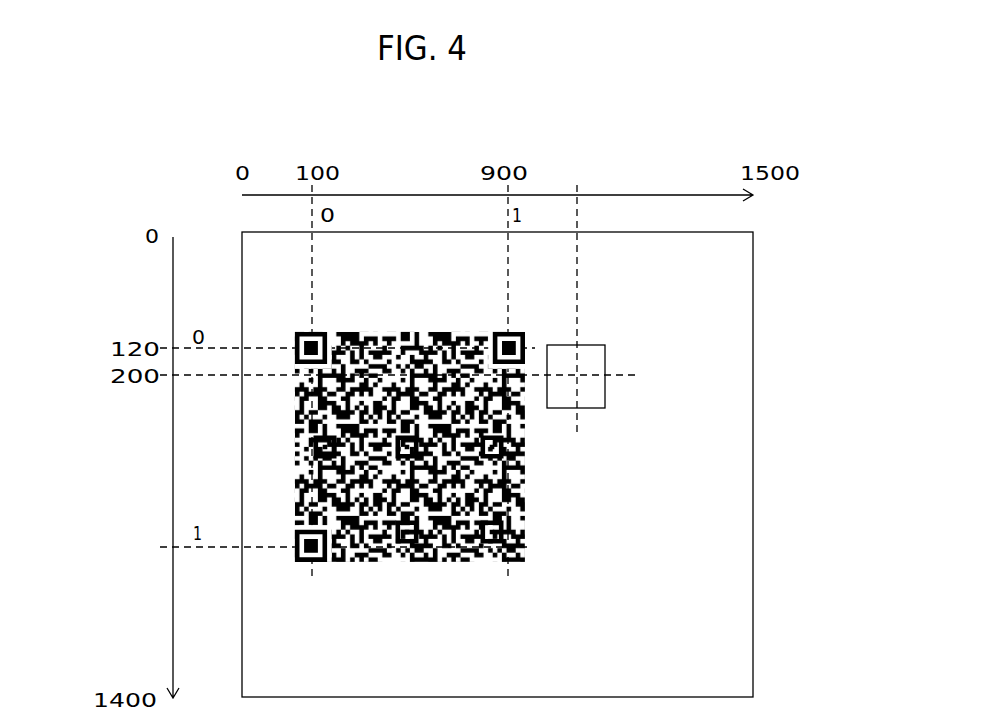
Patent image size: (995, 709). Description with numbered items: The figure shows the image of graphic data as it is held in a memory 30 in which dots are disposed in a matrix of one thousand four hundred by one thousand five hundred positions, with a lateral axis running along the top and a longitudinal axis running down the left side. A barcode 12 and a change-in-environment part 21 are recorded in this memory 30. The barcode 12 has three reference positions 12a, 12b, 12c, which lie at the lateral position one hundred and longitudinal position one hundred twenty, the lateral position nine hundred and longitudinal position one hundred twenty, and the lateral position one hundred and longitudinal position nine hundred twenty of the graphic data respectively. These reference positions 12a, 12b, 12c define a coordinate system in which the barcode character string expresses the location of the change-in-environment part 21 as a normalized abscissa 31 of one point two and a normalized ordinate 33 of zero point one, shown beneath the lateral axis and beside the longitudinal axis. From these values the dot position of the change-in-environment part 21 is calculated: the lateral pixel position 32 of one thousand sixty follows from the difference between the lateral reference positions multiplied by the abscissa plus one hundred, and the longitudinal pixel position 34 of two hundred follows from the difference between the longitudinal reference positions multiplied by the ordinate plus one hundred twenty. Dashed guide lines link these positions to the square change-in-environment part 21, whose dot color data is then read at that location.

The barcode 12 is at (467, 447).
The reference position 12a is at (312, 340).
The reference position 12b is at (516, 337).
The reference position 12c is at (323, 562).
The change-in-environment part 21 is at (605, 363).
The memory 30 is at (737, 408).
The normalized horizontal coordinate 31 is at (633, 207).
The pixel horizontal coordinate 32 is at (568, 157).
The normalized vertical coordinate 33 is at (190, 400).
The pixel vertical coordinate 34 is at (120, 562).